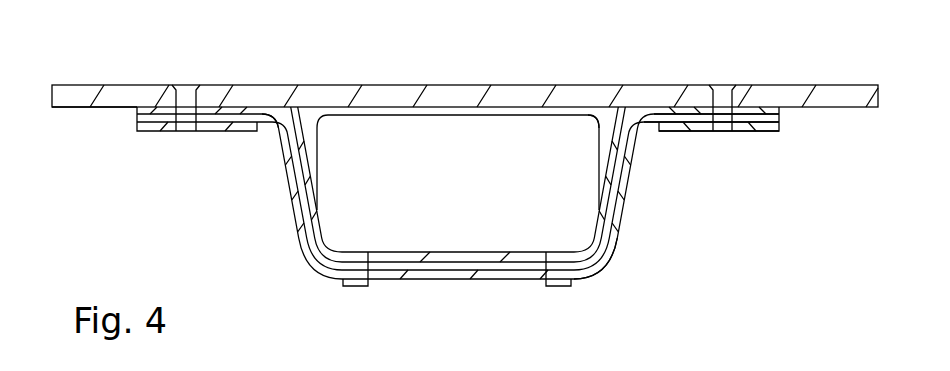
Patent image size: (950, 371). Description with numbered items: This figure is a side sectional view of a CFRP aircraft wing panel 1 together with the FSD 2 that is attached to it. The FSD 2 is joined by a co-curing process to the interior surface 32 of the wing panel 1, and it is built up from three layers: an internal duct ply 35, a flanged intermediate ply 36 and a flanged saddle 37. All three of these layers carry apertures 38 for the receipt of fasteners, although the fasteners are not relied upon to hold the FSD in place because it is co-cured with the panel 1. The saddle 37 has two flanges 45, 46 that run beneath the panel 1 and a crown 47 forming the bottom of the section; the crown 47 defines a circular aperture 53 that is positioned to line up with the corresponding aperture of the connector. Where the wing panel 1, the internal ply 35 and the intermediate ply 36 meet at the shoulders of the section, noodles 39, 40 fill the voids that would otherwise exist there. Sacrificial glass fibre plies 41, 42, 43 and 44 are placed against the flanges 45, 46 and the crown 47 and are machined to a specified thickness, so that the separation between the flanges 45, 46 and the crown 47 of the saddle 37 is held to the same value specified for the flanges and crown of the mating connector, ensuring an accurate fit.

The aircraft wing panel 1 is at (455, 85).
The FSD 2 is at (467, 183).
The interior surface 32 is at (80, 107).
The internal duct ply 35 is at (525, 110).
The flanged intermediate ply 36 is at (690, 115).
The flanged saddle 37 is at (297, 222).
The apertures 38 is at (722, 93).
The noodle 39 is at (300, 107).
The noodle 40 is at (627, 112).
The sacrificial glass fibre ply 41 is at (165, 131).
The sacrificial glass fibre ply 42 is at (765, 133).
The sacrificial glass fibre ply 43 is at (350, 286).
The sacrificial glass fibre ply 44 is at (563, 286).
The flange 45 is at (137, 125).
The flange 46 is at (773, 123).
The crown 47 is at (577, 280).
The circular aperture 53 is at (472, 270).